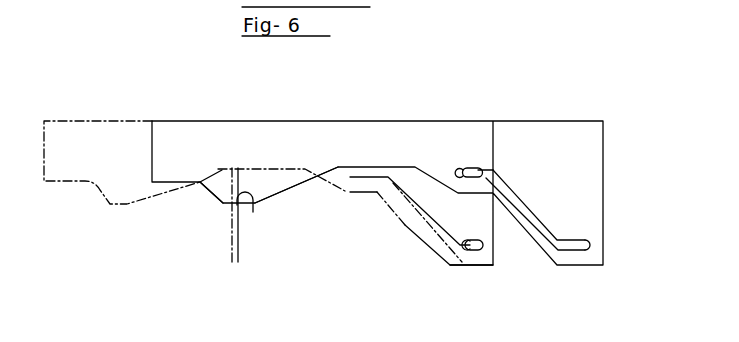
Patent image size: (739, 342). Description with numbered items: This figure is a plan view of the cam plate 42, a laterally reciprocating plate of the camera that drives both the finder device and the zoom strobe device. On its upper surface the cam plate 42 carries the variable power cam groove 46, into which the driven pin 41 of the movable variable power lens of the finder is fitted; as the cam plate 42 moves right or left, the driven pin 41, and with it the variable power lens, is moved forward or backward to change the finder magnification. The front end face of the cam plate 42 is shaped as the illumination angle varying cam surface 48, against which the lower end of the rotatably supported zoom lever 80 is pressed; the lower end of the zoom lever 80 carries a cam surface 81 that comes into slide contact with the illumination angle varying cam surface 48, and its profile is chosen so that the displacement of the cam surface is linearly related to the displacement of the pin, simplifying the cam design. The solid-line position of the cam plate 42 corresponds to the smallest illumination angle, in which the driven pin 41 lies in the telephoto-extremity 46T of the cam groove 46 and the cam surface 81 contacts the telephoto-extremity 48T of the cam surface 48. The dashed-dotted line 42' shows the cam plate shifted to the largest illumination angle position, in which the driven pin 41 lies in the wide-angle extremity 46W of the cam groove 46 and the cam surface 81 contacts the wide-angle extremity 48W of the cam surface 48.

The driven pin 41 is at (467, 180).
The cam plate 42 is at (377, 158).
The dashed-dotted line position of cam plate 42' is at (122, 128).
The variable power cam groove 46 is at (537, 203).
The telephoto-extremity of the cam groove 46T is at (480, 167).
The wide-angle extremity of the cam groove 46W is at (582, 251).
The illumination angle varying cam surface 48 is at (303, 185).
The wide-angle extremity of the illumination angle varying cam surface 48W is at (350, 169).
The telephoto-extremity of the illumination angle varying cam surface 48T is at (225, 207).
The zoom lever 80 is at (242, 248).
The cam surface 81 is at (253, 212).